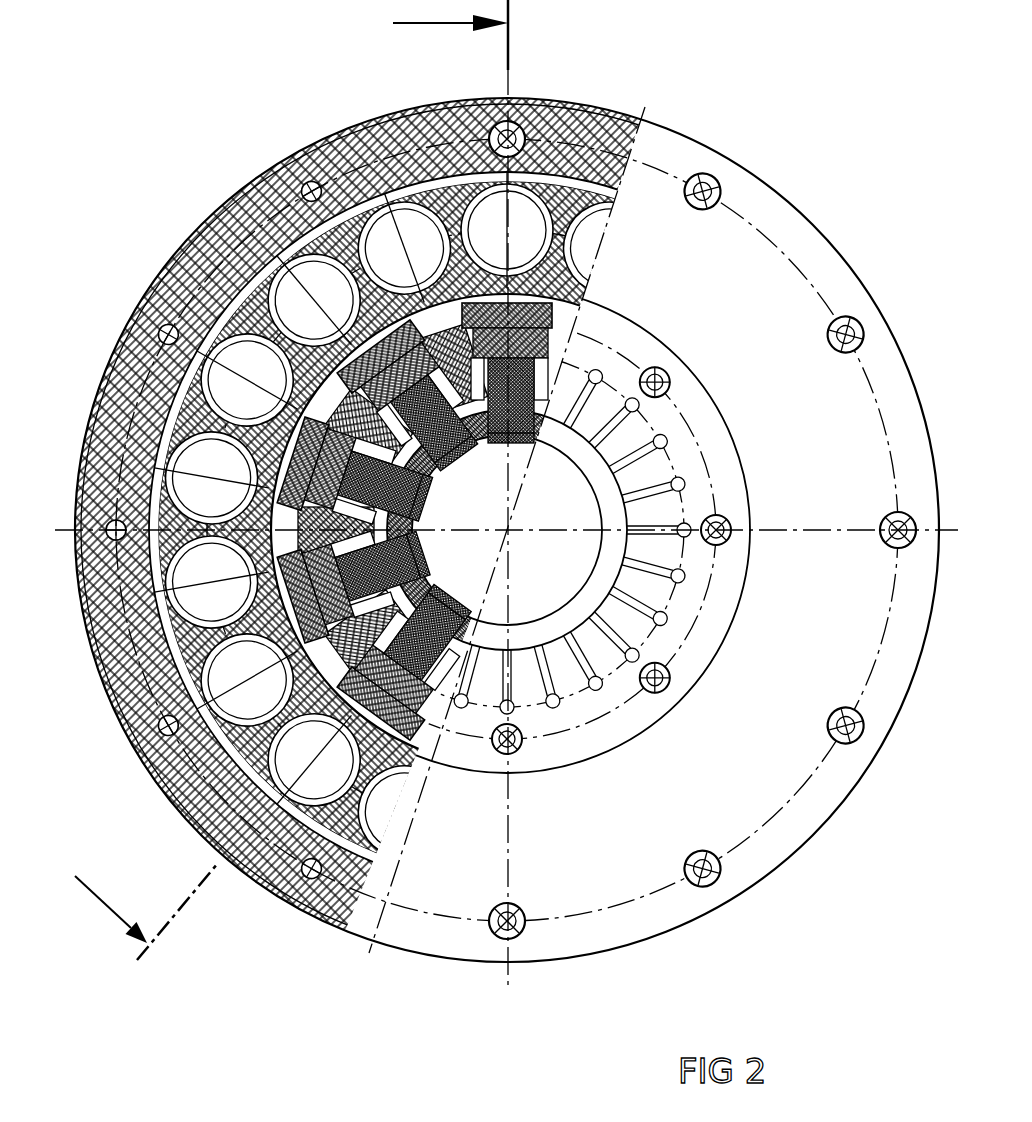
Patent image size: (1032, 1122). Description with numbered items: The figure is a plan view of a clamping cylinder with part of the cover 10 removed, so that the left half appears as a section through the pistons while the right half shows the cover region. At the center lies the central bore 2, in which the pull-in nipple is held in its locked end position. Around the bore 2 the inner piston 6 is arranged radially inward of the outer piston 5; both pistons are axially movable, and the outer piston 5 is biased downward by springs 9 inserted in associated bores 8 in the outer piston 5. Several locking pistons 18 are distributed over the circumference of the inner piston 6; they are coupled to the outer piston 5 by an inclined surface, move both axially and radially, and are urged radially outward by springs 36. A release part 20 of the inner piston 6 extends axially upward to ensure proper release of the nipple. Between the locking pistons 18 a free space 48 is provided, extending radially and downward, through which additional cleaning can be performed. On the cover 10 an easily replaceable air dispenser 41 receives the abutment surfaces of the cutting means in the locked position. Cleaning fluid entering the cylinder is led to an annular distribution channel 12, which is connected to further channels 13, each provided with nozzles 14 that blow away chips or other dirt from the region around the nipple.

The central bore 2 is at (568, 565).
The outer piston 5 is at (337, 843).
The inner piston 6 is at (125, 710).
The bores 8 is at (150, 772).
The springs 9 is at (227, 805).
The cover 10 is at (705, 797).
The distribution channel 12 is at (607, 708).
The channels 13 is at (577, 668).
The nozzles 14 is at (700, 543).
The locking pistons 18 is at (560, 322).
The release part 20 is at (613, 487).
The springs 36 is at (537, 440).
The air dispenser 41 is at (717, 597).
The free space 48 is at (213, 310).